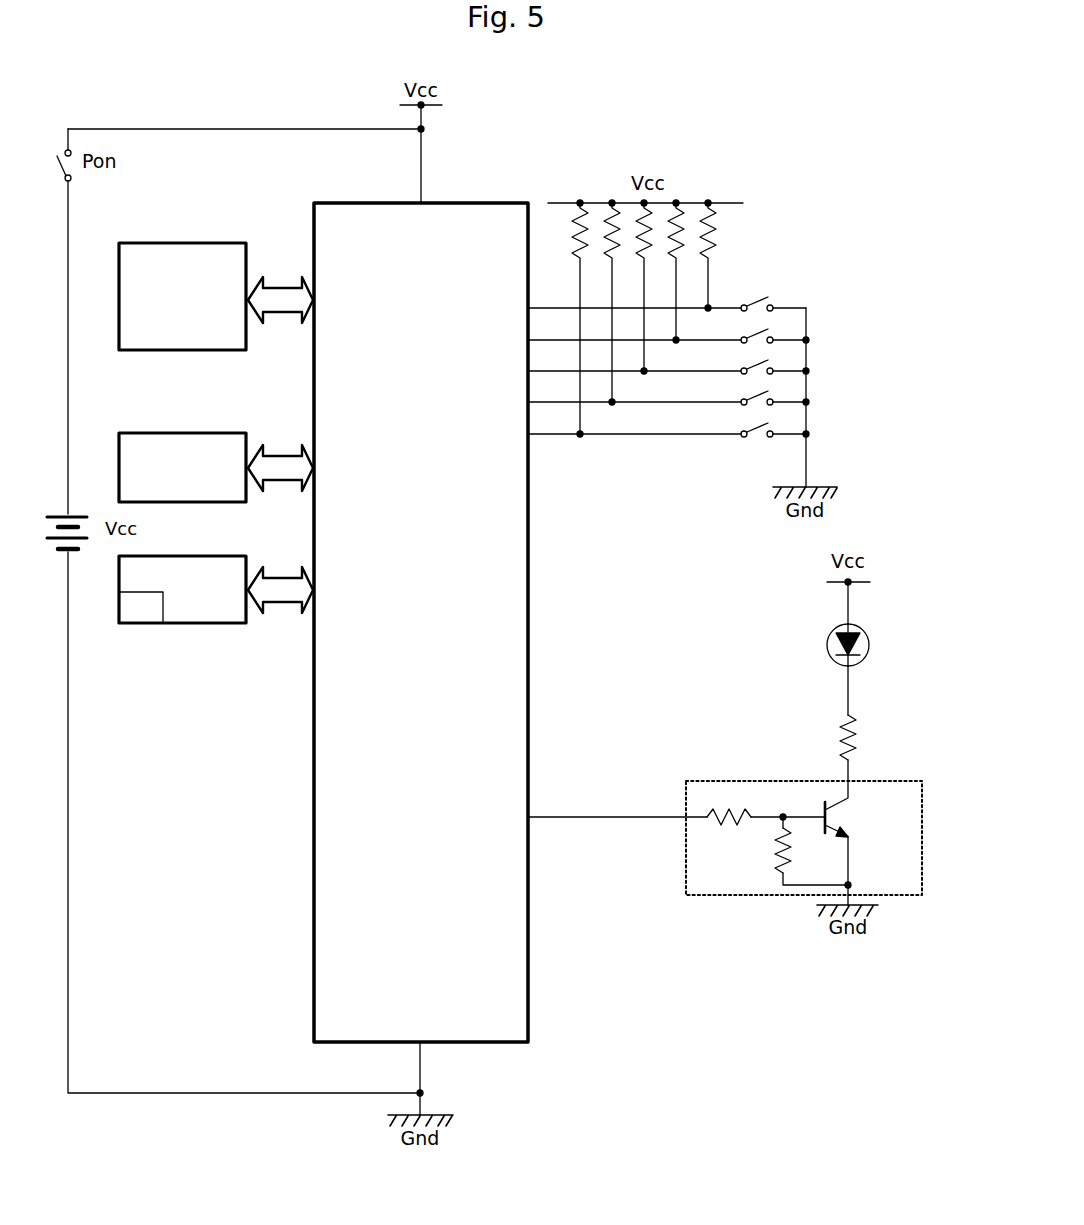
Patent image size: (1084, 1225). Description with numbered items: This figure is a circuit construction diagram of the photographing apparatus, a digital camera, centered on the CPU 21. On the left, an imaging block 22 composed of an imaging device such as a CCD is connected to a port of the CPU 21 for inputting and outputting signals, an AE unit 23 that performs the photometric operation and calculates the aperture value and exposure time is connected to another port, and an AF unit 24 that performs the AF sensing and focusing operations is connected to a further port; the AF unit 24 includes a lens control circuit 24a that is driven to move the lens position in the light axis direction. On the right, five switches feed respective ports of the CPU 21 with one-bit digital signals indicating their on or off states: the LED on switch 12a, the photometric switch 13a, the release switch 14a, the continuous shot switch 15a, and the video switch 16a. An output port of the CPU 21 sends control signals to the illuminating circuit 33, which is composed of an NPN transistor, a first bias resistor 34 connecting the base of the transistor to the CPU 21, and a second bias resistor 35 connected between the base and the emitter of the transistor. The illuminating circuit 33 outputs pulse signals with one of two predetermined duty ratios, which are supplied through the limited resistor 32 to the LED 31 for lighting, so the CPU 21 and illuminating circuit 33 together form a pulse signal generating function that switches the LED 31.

The CPU 21 is at (529, 201).
The imaging block 22 is at (247, 242).
The AE unit 23 is at (247, 431).
The AF unit 24 is at (247, 555).
The lens control circuit 24a is at (149, 625).
The LED on switch 12a is at (773, 298).
The photometric switch 13a is at (773, 330).
The release switch 14a is at (773, 362).
The continuous shot switch 15a is at (773, 393).
The video switch 16a is at (773, 424).
The LED 31 is at (866, 636).
The limited resistor 32 is at (852, 716).
The illuminating circuit 33 is at (743, 821).
The first bias resistor 34 is at (745, 812).
The second bias resistor 35 is at (768, 858).